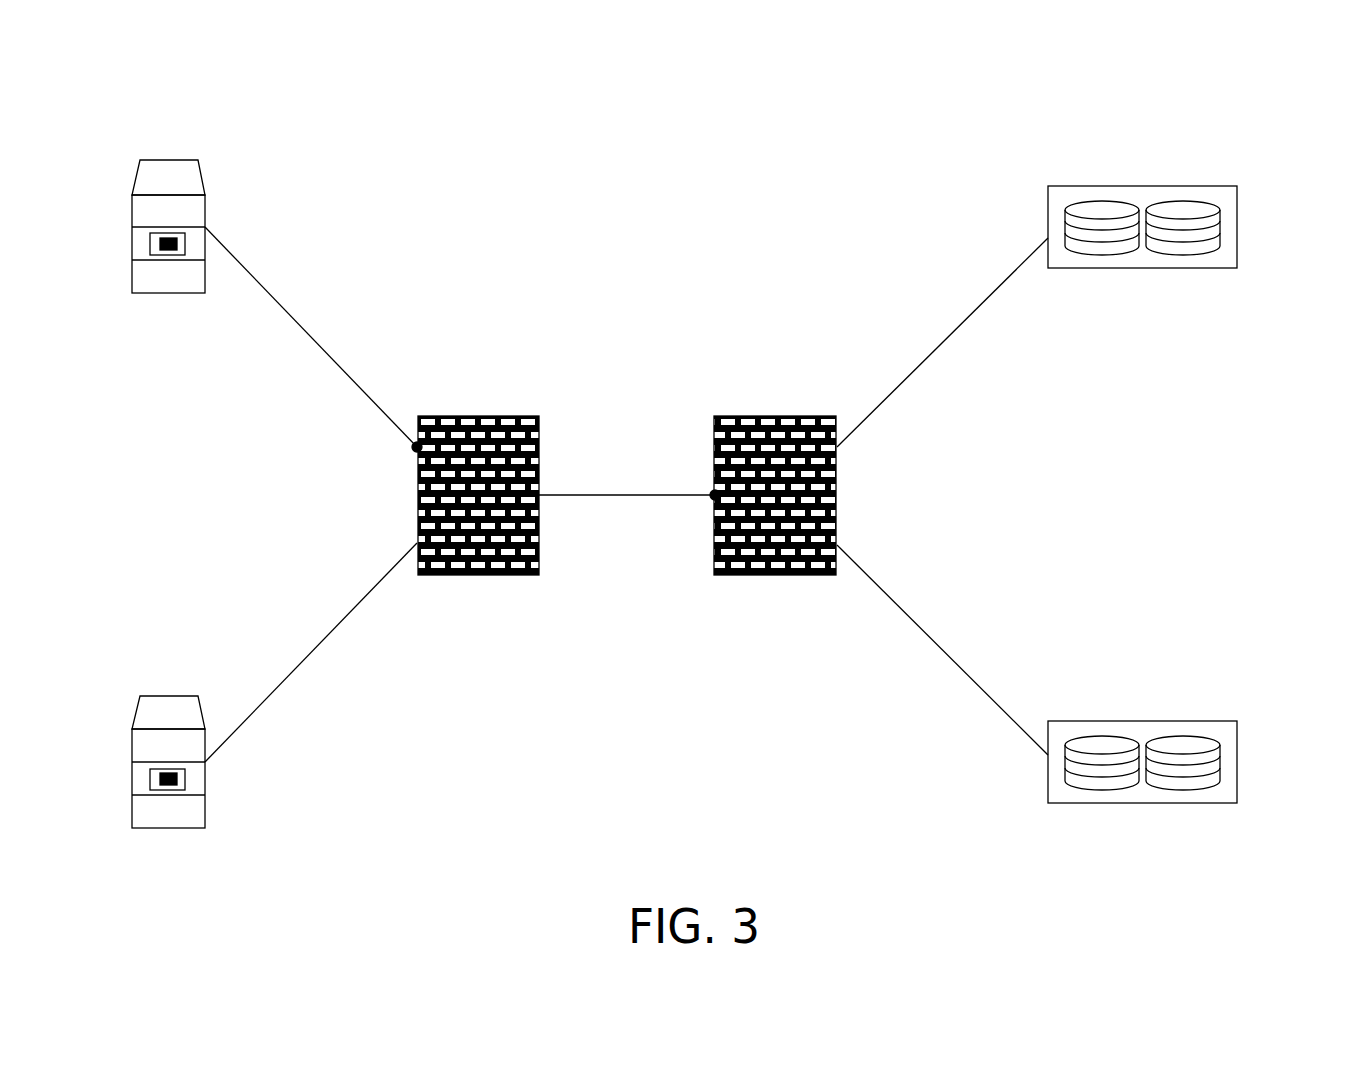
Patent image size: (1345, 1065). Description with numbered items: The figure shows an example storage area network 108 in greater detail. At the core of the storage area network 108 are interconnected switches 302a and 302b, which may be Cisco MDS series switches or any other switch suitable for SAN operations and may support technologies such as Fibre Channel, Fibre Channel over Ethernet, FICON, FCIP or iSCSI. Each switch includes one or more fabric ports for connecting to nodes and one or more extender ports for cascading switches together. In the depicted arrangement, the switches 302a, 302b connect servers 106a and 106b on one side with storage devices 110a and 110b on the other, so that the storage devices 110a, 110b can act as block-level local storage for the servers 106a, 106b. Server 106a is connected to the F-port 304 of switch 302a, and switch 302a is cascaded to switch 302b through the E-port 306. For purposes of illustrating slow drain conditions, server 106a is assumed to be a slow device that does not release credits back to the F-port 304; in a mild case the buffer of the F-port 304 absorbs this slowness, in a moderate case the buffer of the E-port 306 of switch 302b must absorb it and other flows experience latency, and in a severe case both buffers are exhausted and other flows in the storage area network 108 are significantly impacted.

The storage area network 108 is at (1243, 70).
The server 106a is at (168, 160).
The server 106b is at (168, 696).
The switch 302a is at (478, 416).
The switch 302b is at (776, 416).
The F-port 304 is at (412, 449).
The E-port 306 is at (712, 496).
The storage device 110a is at (1143, 186).
The storage device 110b is at (1143, 721).